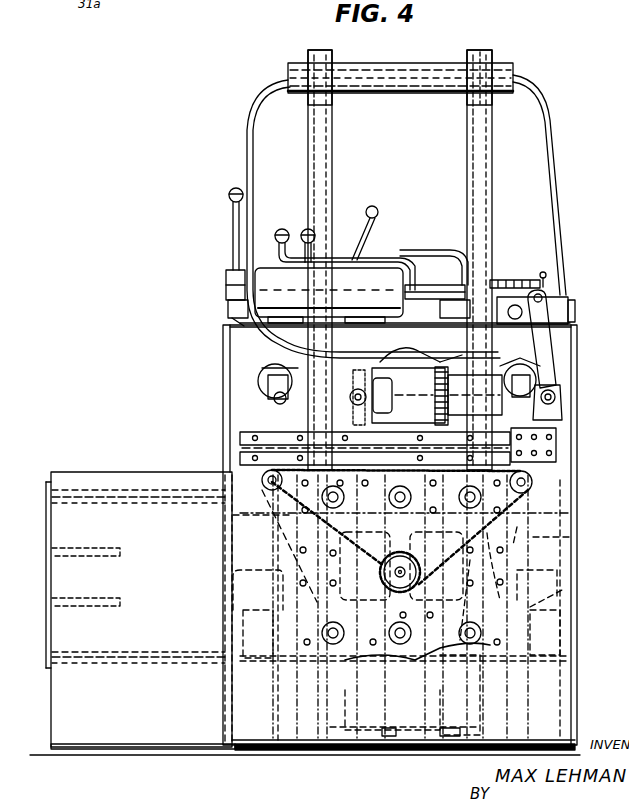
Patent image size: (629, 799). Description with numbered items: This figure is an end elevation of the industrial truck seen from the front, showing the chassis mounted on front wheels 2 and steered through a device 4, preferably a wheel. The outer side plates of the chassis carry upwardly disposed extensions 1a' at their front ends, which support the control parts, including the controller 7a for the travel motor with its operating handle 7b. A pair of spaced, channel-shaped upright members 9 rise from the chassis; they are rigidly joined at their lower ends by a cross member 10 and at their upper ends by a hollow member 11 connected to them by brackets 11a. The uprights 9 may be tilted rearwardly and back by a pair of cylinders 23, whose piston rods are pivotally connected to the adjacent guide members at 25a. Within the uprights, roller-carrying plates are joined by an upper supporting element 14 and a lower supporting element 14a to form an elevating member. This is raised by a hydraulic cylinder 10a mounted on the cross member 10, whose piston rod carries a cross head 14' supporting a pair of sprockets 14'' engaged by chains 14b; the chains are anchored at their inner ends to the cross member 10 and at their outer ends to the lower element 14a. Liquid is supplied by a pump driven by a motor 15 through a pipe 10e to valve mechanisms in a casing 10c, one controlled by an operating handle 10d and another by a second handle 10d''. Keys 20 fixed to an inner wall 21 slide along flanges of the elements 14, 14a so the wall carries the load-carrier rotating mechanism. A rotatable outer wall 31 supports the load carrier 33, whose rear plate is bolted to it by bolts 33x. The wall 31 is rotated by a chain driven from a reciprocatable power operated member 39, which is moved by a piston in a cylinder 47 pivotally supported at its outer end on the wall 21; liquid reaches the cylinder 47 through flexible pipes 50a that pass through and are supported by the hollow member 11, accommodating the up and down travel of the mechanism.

The front wheels 2 is at (255, 750).
The steering device 4 is at (540, 275).
The controller 7a is at (248, 308).
The operating handle 7b is at (233, 224).
The upright members 9 is at (318, 143).
The cross member 10 is at (412, 752).
The cylinder 10a is at (432, 700).
The casing 10c is at (566, 306).
The operating handle 10d is at (286, 231).
The valve knob 10d'' is at (300, 220).
The pipe 10e is at (548, 338).
The hollow member 11 is at (412, 93).
The brackets 11a is at (308, 100).
The upper supporting element 14 is at (423, 533).
The cross head 14' is at (410, 348).
The sprockets 14'' is at (447, 348).
The lower supporting element 14a is at (572, 637).
The chains 14b is at (335, 768).
The motor 15 is at (354, 392).
The upwardly disposed extensions 1a' is at (398, 534).
The keys 20 is at (405, 708).
The inner wall 21 is at (572, 540).
The cylinders 23 is at (262, 376).
The pivotal connection 25a is at (278, 398).
The outer member or wall 31 is at (574, 592).
The load carrier 33 is at (139, 609).
The bolts 33x is at (333, 645).
The power operated member 39 is at (556, 445).
The cylinder 47 is at (560, 396).
The flexible pipe 50a is at (247, 146).